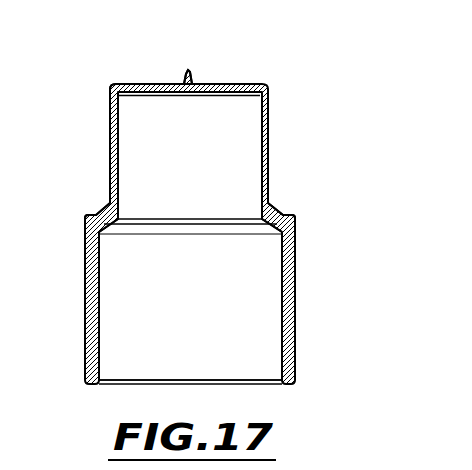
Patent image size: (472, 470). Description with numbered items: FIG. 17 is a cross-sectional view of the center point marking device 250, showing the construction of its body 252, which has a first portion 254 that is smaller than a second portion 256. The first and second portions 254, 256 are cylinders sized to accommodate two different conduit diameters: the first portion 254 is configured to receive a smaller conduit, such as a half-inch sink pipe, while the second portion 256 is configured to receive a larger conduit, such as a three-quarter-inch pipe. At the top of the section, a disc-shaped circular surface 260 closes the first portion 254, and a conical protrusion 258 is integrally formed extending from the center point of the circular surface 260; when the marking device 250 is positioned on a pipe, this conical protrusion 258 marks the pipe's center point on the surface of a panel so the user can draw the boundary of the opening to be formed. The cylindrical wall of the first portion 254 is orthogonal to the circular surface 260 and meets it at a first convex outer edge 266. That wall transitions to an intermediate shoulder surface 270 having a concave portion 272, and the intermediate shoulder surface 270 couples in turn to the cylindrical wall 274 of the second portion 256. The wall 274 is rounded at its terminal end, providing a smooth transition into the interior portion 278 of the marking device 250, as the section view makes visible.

The marking device 250 is at (283, 80).
The body 252 is at (69, 254).
The first portion 254 is at (268, 158).
The second portion 256 is at (296, 294).
The conical protrusion 258 is at (184, 70).
The circular surface 260 is at (219, 84).
The first convex outer edge 266 is at (112, 83).
The intermediate shoulder surface 270 is at (93, 213).
The concave portion 272 is at (272, 211).
The cylindrical wall 274 is at (84, 300).
The interior portion 278 is at (125, 349).